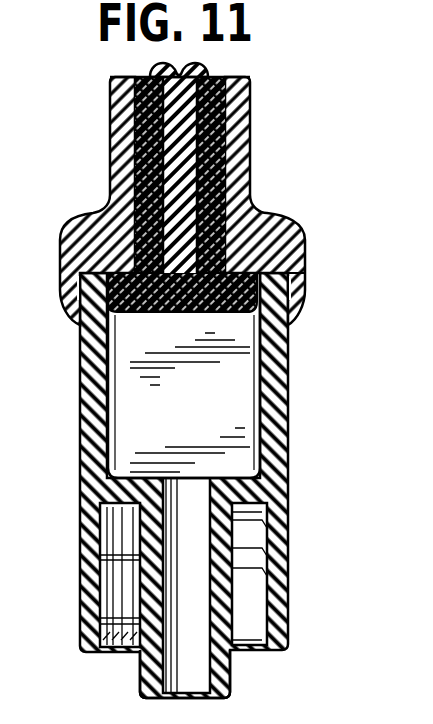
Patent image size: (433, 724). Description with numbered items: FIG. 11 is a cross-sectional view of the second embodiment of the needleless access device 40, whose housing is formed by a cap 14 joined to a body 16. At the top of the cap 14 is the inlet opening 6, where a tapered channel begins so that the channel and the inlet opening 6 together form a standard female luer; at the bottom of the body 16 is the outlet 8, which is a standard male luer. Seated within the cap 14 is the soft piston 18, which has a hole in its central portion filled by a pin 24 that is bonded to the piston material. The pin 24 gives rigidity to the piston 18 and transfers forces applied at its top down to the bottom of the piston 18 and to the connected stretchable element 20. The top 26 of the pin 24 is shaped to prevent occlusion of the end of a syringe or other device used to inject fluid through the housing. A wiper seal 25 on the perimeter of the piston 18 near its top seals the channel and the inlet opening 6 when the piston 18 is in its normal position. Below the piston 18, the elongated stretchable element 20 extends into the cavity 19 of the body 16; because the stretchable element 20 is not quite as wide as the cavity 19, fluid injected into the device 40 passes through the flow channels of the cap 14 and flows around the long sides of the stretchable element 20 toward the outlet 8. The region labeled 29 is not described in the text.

The inlet opening 6 is at (137, 80).
The outlet 8 is at (230, 688).
The cap 14 is at (205, 201).
The body 16 is at (85, 440).
The piston 18 is at (233, 170).
The cavity 19 is at (248, 445).
The stretchable element 20 is at (105, 349).
The pin 24 is at (232, 157).
The wiper seal 25 is at (128, 83).
The top of pin 26 is at (204, 73).
The seal 29 is at (280, 283).
The needleless access device 40 is at (194, 382).